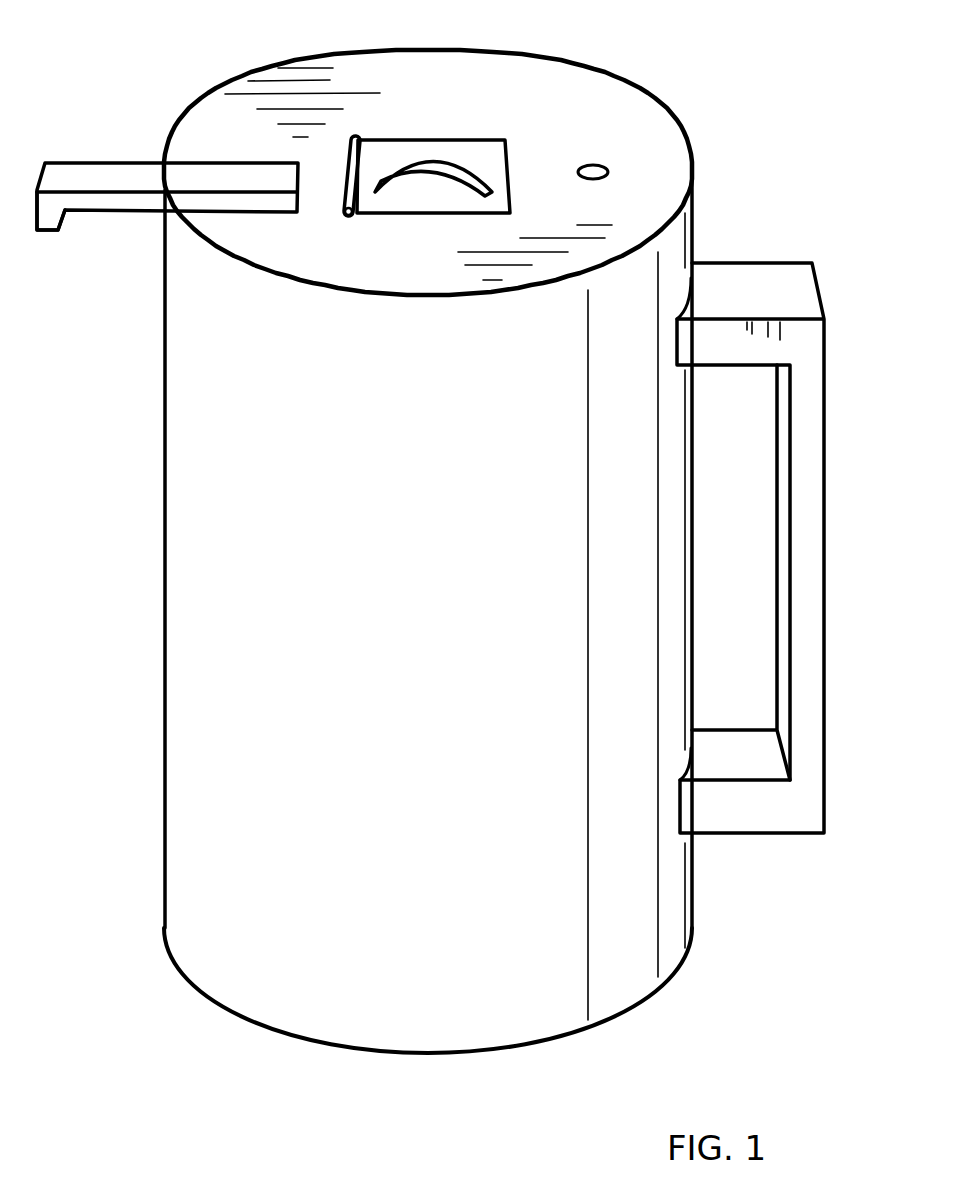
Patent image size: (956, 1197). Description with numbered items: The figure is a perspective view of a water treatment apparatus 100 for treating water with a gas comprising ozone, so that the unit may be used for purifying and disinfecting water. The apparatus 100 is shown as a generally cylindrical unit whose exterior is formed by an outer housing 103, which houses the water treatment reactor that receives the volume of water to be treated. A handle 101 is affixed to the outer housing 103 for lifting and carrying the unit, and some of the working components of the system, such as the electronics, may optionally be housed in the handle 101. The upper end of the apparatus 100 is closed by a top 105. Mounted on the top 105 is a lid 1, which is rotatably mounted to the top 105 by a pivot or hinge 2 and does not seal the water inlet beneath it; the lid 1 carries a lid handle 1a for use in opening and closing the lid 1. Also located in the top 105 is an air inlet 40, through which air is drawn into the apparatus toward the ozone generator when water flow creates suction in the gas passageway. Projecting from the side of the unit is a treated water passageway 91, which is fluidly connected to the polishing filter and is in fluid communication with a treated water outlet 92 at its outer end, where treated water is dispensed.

The water treatment apparatus 100 is at (469, 534).
The top 105 is at (674, 167).
The outer housing 103 is at (694, 912).
The handle 101 is at (838, 441).
The treated water passageway 91 is at (75, 175).
The treated water outlet 92 is at (50, 232).
The air inlet 40 is at (594, 164).
The lid 1 is at (490, 150).
The lid handle 1a is at (424, 160).
The hinge 2 is at (357, 139).